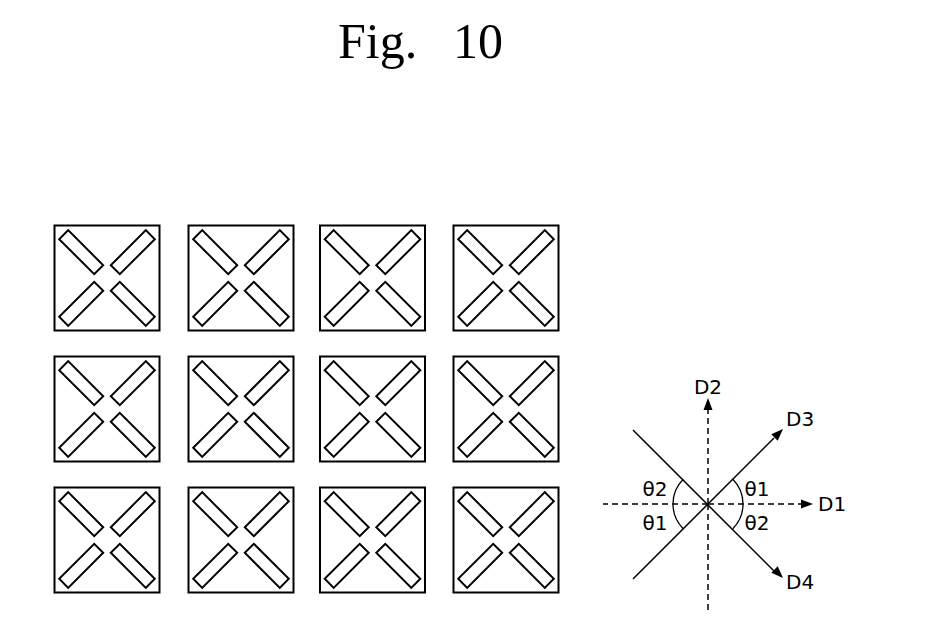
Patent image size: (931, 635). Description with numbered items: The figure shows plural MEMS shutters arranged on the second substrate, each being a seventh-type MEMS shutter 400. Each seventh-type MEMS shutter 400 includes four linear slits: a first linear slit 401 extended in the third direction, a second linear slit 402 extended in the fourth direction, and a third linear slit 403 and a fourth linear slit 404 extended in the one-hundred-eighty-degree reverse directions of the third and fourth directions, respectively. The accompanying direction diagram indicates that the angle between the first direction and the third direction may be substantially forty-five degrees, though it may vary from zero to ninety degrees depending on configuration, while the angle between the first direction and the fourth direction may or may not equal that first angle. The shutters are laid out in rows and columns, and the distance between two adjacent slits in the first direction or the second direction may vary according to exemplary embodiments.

The seventh-type MEMS shutter 400 is at (613, 167).
The first linear slit 401 is at (530, 240).
The second linear slit 402 is at (540, 297).
The third linear slit 403 is at (466, 303).
The fourth linear slit 404 is at (481, 240).